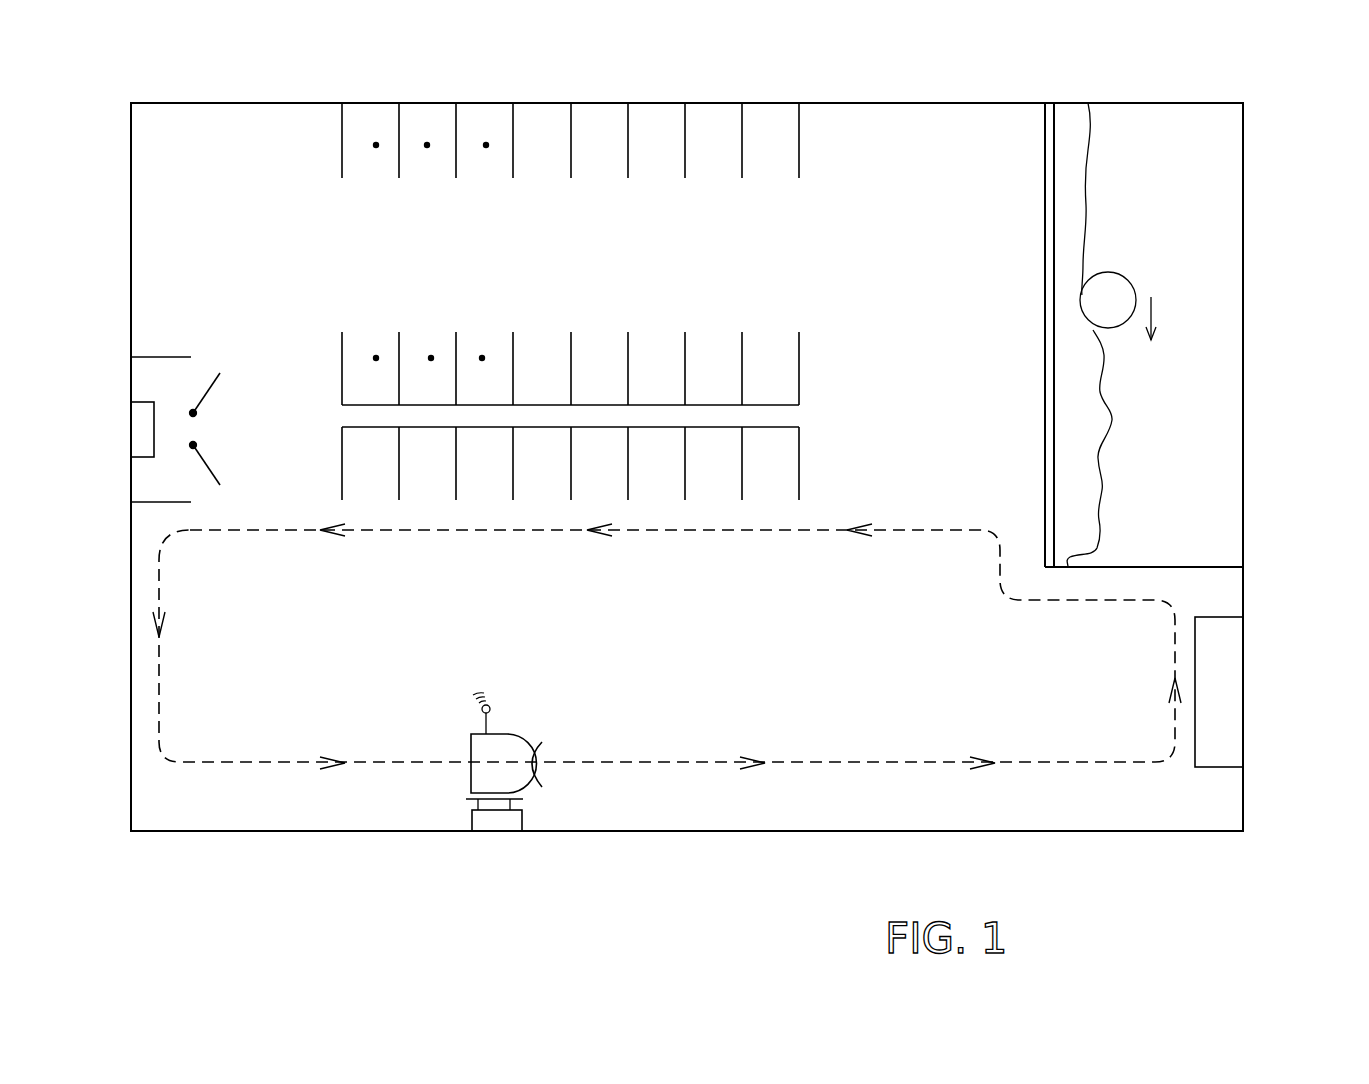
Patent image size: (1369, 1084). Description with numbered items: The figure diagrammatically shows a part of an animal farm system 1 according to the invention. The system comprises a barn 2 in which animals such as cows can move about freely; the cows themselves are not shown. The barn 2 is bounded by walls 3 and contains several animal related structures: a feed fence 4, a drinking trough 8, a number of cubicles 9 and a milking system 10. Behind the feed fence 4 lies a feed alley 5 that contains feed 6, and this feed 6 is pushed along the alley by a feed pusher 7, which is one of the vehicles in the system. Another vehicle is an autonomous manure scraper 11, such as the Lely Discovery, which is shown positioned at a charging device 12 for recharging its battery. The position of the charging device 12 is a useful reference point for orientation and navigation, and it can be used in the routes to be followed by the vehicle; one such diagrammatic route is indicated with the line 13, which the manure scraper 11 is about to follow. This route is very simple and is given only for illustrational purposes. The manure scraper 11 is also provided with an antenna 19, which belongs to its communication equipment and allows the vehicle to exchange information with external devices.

The animal farm system 1 is at (700, 477).
The barn 2 is at (899, 293).
The walls 3 is at (943, 103).
The feed fence 4 is at (1051, 178).
The feed alley 5 is at (1181, 436).
The feed 6 is at (1062, 463).
The feed pusher 7 is at (1115, 275).
The drinking trough 8 is at (1213, 688).
The cubicles 9 is at (486, 145).
The milking system 10 is at (143, 475).
The manure scraper 11 is at (498, 734).
The charging device 12 is at (493, 821).
The line indicating route 13 is at (863, 763).
The antenna 19 is at (486, 720).